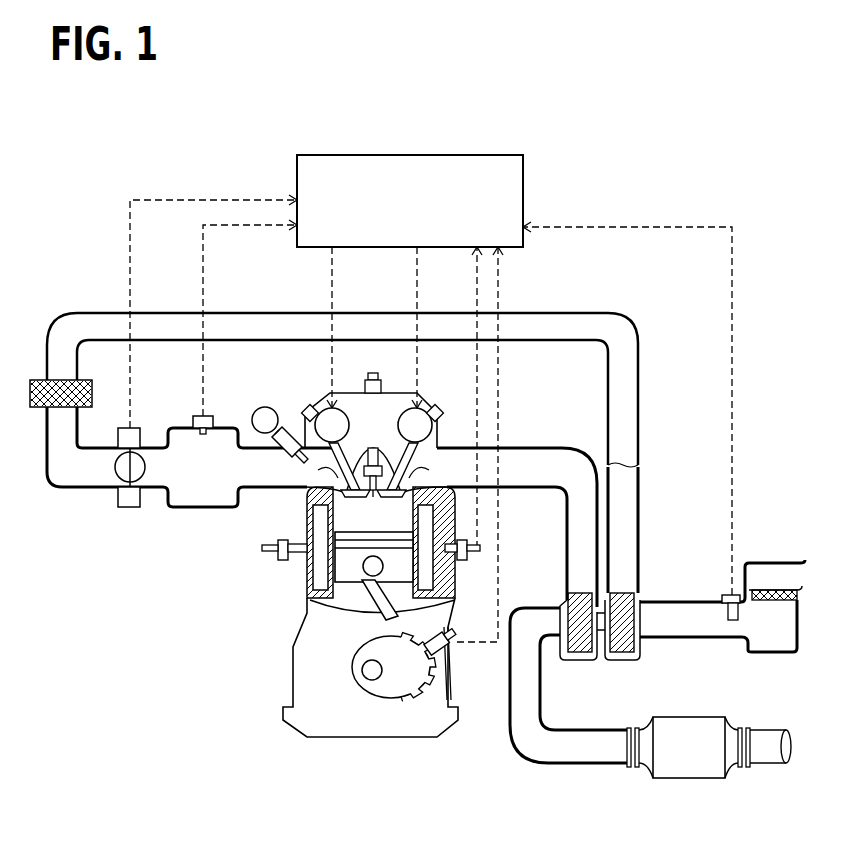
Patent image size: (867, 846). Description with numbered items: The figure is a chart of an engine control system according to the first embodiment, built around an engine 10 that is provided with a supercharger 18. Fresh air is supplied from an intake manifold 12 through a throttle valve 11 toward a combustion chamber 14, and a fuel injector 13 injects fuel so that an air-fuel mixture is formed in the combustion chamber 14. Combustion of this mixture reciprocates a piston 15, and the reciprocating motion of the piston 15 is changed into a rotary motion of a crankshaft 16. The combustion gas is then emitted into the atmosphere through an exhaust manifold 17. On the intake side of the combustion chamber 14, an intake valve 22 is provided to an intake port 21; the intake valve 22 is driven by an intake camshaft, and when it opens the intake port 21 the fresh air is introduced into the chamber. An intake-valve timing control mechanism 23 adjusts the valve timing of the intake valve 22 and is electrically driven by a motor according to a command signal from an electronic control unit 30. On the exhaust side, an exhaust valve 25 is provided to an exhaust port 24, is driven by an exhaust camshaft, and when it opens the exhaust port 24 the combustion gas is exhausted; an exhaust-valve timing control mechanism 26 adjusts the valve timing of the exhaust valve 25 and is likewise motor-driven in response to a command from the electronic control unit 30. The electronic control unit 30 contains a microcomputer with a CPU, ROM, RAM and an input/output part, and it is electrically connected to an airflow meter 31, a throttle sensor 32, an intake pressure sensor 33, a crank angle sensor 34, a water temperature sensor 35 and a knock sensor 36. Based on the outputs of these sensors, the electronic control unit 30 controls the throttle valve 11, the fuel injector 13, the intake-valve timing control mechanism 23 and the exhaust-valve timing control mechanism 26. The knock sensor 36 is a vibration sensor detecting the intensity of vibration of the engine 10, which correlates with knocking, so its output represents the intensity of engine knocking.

The engine 10 is at (250, 663).
The throttle valve 11 is at (120, 468).
The intake manifold 12 is at (262, 490).
The fuel injector 13 is at (276, 440).
The combustion chamber 14 is at (360, 518).
The piston 15 is at (350, 578).
The crankshaft 16 is at (387, 669).
The exhaust manifold 17 is at (522, 448).
The supercharger 18 is at (618, 663).
The intake port 21 is at (304, 447).
The intake valve 22 is at (307, 493).
The intake-valve timing control mechanism 23 is at (334, 405).
The exhaust port 24 is at (440, 443).
The exhaust valve 25 is at (433, 510).
The exhaust-valve timing control mechanism 26 is at (412, 405).
The electronic control unit 30 is at (485, 155).
The airflow meter 31 is at (723, 593).
The throttle sensor 32 is at (124, 427).
The intake pressure sensor 33 is at (198, 415).
The crank angle sensor 34 is at (455, 630).
The water temperature sensor 35 is at (262, 548).
The knock sensor 36 is at (467, 556).